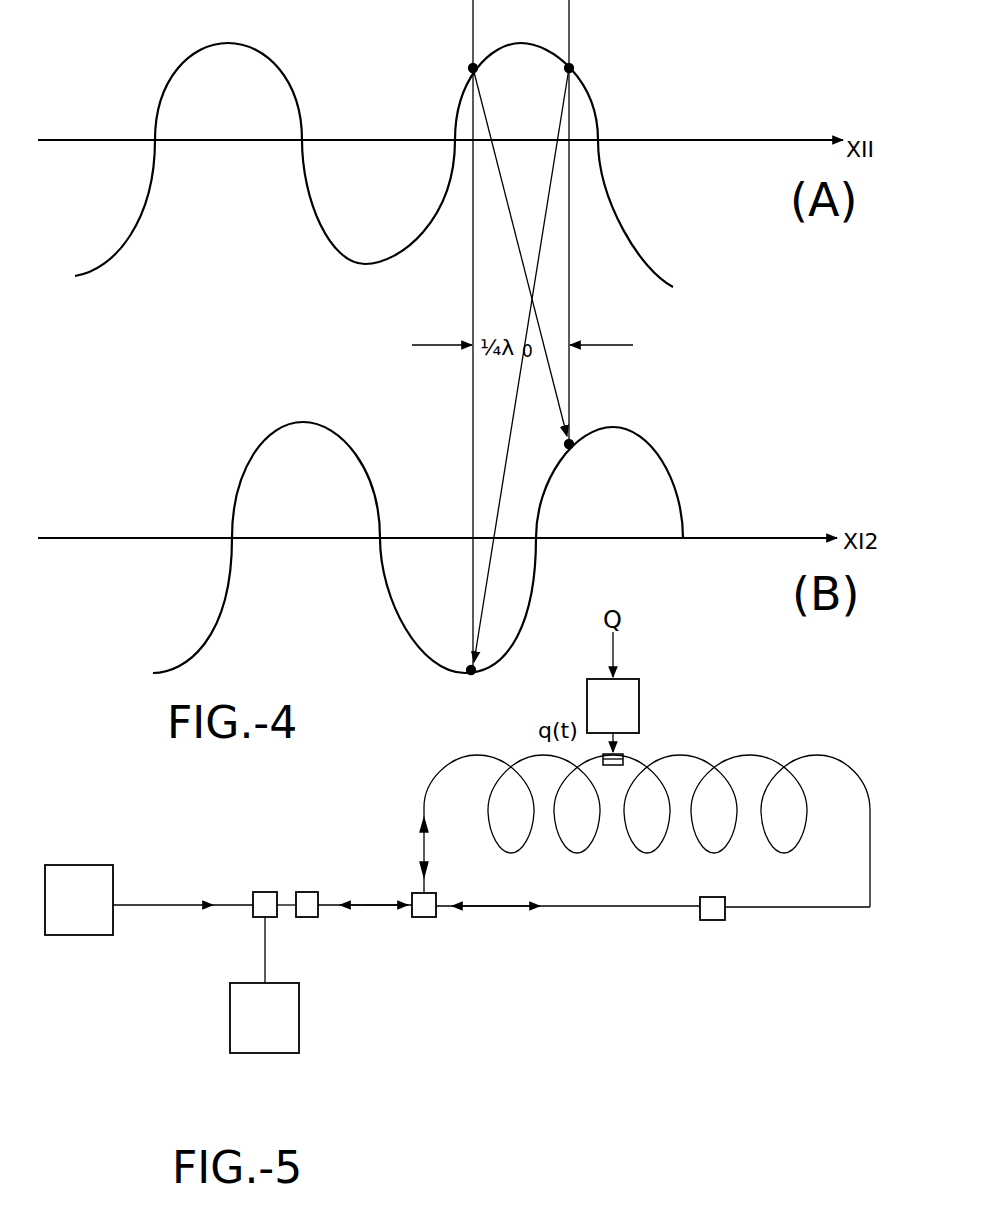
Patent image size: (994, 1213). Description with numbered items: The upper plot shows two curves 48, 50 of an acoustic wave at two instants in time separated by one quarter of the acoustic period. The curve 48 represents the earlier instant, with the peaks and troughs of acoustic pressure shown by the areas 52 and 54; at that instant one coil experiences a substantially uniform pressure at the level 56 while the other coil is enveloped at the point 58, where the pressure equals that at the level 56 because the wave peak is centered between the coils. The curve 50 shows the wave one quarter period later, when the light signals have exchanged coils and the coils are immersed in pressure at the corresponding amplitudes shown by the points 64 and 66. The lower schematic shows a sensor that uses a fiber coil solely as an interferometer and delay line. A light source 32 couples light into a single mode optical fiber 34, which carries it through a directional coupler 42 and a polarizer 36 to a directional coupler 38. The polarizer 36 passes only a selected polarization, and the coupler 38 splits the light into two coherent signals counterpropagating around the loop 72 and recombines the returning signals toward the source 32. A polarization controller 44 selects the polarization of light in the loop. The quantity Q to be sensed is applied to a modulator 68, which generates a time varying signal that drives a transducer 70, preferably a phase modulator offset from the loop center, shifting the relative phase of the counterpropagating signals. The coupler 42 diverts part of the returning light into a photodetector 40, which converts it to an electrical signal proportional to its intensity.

In FIG. 4, the curve 48 is at (276, 62).
In FIG. 4, the curve 50 is at (303, 422).
In FIG. 4, the peak of acoustic pressure 52 is at (531, 43).
In FIG. 4, the trough of acoustic pressure 54 is at (380, 264).
In FIG. 4, the pressure level 56 is at (473, 68).
In FIG. 4, the point 58 is at (569, 68).
In FIG. 4, the point 64 is at (569, 444).
In FIG. 4, the point 66 is at (471, 670).
In FIG. 5, the light source 32 is at (78, 865).
In FIG. 5, the single mode optical fiber 34 is at (133, 905).
In FIG. 5, the polarizer 36 is at (305, 892).
In FIG. 5, the directional coupler 38 is at (436, 917).
In FIG. 5, the photodetector 40 is at (299, 1013).
In FIG. 5, the directional coupler 42 is at (253, 892).
In FIG. 5, the polarization controller 44 is at (710, 920).
In FIG. 5, the modulator 68 is at (639, 705).
In FIG. 5, the transducer 70 is at (623, 757).
In FIG. 5, the loop 72 is at (770, 744).